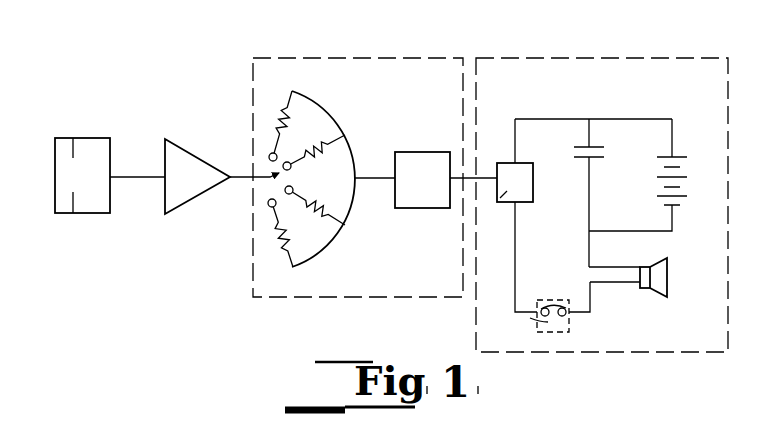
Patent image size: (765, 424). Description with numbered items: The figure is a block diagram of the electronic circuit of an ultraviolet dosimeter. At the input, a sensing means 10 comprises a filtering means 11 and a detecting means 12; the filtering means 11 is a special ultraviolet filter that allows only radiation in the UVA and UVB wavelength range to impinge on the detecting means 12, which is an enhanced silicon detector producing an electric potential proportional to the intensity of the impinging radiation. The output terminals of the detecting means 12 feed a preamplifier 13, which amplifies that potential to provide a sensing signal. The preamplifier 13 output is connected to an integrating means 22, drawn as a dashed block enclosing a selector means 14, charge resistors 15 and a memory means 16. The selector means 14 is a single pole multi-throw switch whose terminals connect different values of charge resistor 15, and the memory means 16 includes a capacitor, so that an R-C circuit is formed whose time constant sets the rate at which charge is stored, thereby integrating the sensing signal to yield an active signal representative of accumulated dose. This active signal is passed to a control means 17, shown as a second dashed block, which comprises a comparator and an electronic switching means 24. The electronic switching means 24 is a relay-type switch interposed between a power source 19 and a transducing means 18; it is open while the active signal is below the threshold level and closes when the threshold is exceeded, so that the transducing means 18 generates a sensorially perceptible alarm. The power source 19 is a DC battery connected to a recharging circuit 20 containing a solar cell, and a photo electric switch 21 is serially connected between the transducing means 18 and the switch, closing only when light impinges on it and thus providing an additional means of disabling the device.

The sensing means 10 is at (50, 112).
The filtering means 11 is at (66, 212).
The detecting means 12 is at (90, 150).
The preamplifier 13 is at (190, 148).
The selector means 14 is at (250, 148).
The charge resistors 15 is at (338, 97).
The memory means 16 is at (395, 197).
The control means 17 is at (578, 58).
The transducing means 18 is at (656, 292).
The power source 19 is at (596, 138).
The recharging circuit 20 is at (693, 141).
The photo electric switch 21 is at (570, 331).
The integrating means 22 is at (468, 58).
The electronic switching means 24 is at (503, 203).